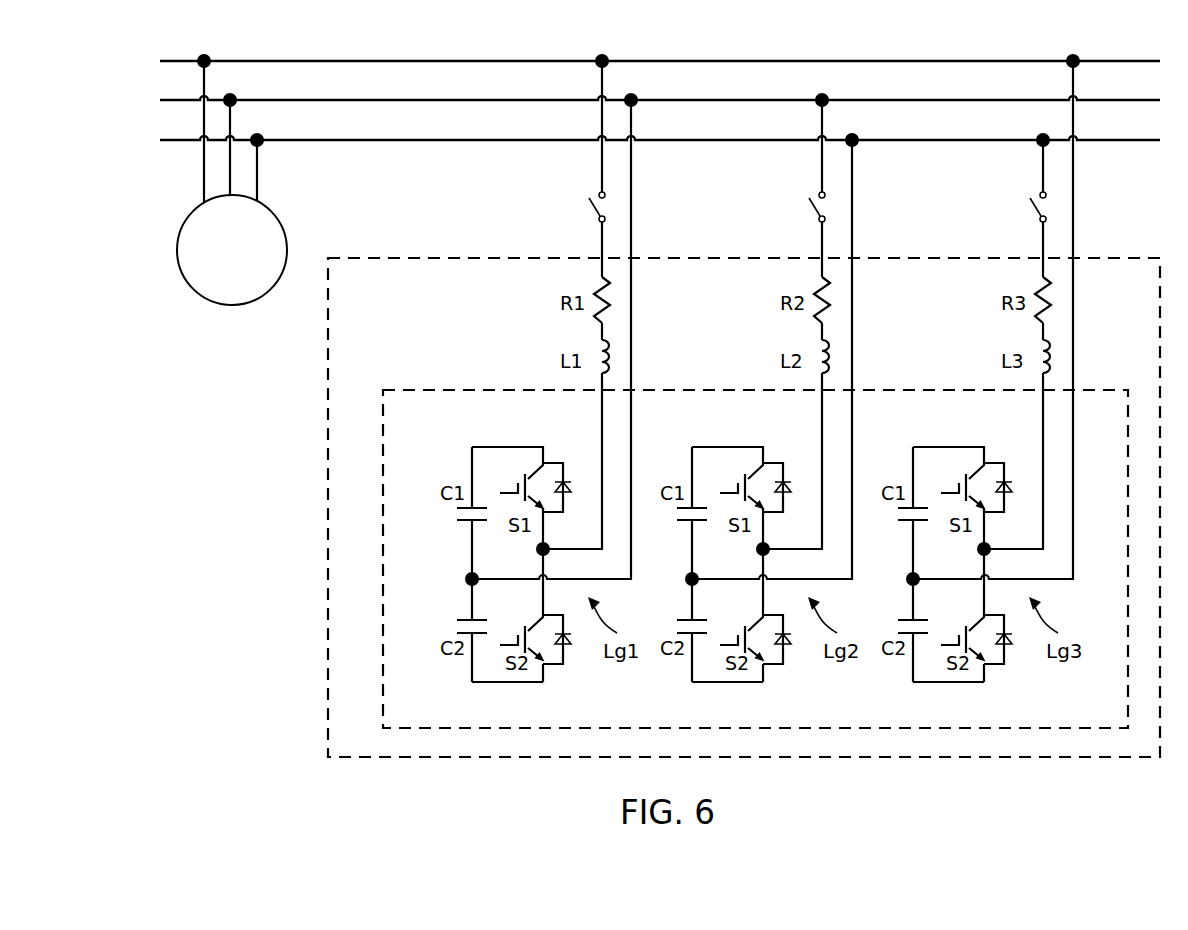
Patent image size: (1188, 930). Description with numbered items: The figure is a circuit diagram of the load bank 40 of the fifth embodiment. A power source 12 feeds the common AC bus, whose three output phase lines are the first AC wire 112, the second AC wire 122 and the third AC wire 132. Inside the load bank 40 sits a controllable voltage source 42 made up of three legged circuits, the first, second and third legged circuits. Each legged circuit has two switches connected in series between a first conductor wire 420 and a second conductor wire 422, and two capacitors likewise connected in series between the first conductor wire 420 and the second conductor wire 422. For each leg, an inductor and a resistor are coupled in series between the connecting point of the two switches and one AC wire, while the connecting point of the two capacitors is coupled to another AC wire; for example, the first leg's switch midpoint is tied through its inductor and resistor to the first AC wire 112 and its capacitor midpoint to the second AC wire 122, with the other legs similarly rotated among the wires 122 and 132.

The power source 12 is at (211, 304).
The load bank 40 is at (1107, 258).
The controllable voltage source 42 is at (1095, 388).
The first AC wire 112 is at (673, 59).
The second AC wire 122 is at (673, 98).
The third AC wire 132 is at (673, 138).
The first conductor wire 420 is at (515, 446).
The second conductor wire 422 is at (527, 682).